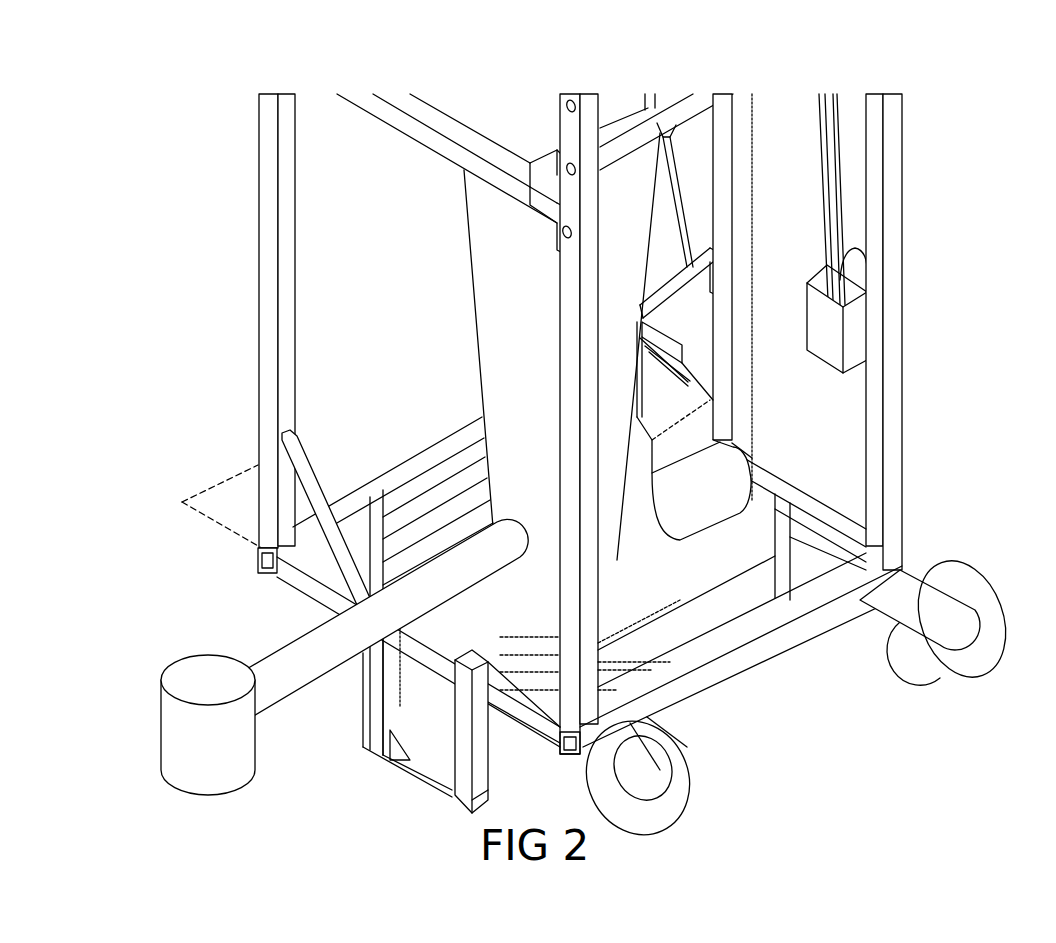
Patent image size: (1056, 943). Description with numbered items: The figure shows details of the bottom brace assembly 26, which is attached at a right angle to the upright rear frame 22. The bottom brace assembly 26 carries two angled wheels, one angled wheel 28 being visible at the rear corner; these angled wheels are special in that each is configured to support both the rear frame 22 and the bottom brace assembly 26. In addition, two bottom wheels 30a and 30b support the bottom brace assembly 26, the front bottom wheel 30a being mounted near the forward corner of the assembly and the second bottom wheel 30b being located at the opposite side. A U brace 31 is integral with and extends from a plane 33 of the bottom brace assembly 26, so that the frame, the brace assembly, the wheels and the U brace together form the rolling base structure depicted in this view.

The rear frame 22 is at (910, 338).
The bottom brace assembly 26 is at (737, 660).
The angled wheel 28 is at (943, 652).
The bottom wheel 30a is at (635, 813).
The bottom wheel 30b is at (357, 663).
The U brace 31 is at (463, 790).
The plane 33 is at (217, 485).